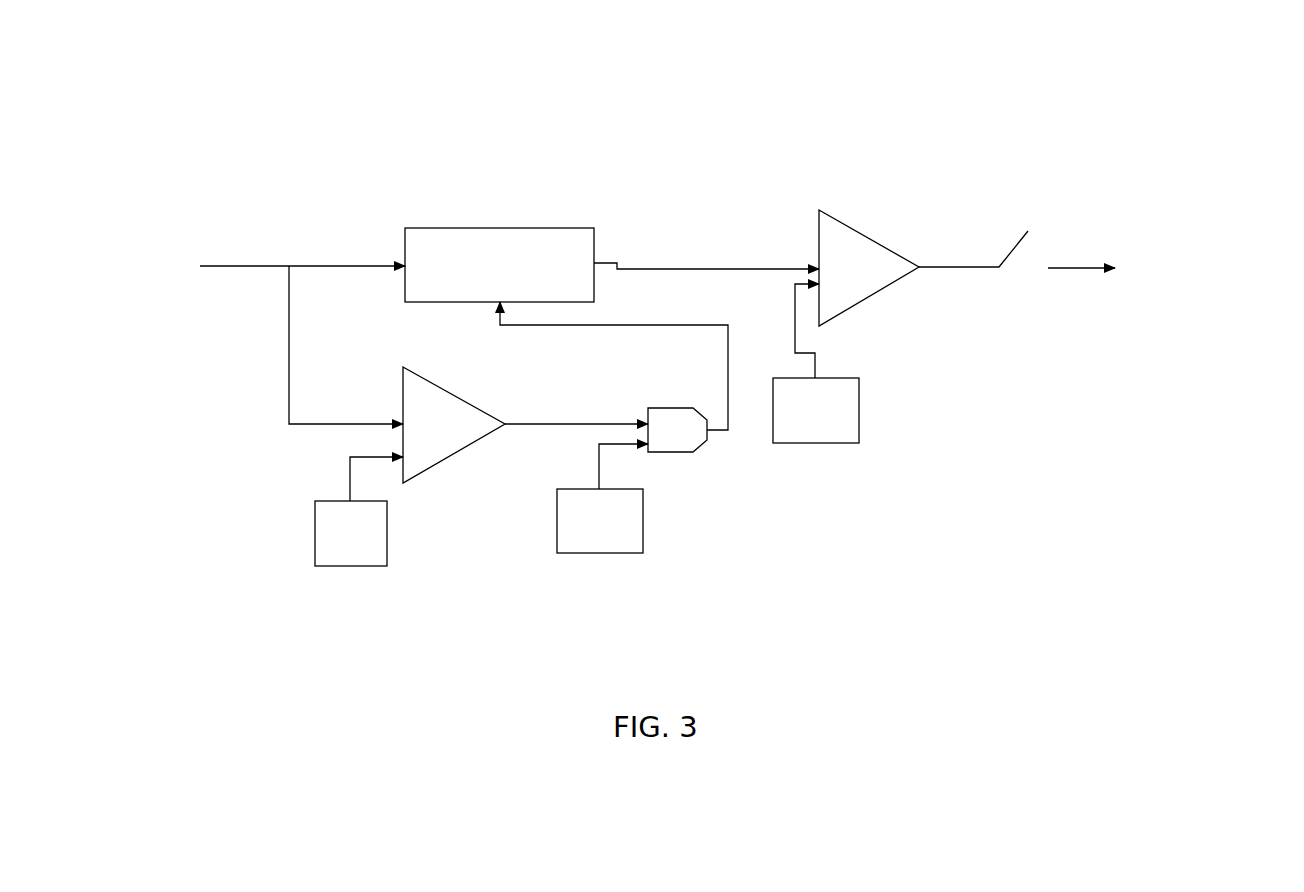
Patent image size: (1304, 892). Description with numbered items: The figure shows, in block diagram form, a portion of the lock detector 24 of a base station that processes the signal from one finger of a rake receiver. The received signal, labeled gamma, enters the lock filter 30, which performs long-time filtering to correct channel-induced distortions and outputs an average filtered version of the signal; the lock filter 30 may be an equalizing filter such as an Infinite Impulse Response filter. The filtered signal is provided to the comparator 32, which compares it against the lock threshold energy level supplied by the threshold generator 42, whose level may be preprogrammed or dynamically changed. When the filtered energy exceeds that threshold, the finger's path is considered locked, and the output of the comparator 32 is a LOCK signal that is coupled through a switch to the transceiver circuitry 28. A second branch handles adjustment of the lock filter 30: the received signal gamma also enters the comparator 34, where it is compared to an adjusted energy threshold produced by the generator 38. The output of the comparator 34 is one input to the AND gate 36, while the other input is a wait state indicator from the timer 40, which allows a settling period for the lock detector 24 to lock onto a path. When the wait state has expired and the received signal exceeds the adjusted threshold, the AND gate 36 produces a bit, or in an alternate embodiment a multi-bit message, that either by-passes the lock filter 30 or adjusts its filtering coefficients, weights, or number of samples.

The lock detector 24 is at (270, 142).
The transceiver circuitry 28 is at (1158, 260).
The lock filter 30 is at (500, 228).
The comparator 32 is at (877, 238).
The comparator 34 is at (452, 397).
The AND gate 36 is at (675, 408).
The generator 38 is at (390, 527).
The timer 40 is at (645, 523).
The threshold generator 42 is at (860, 407).